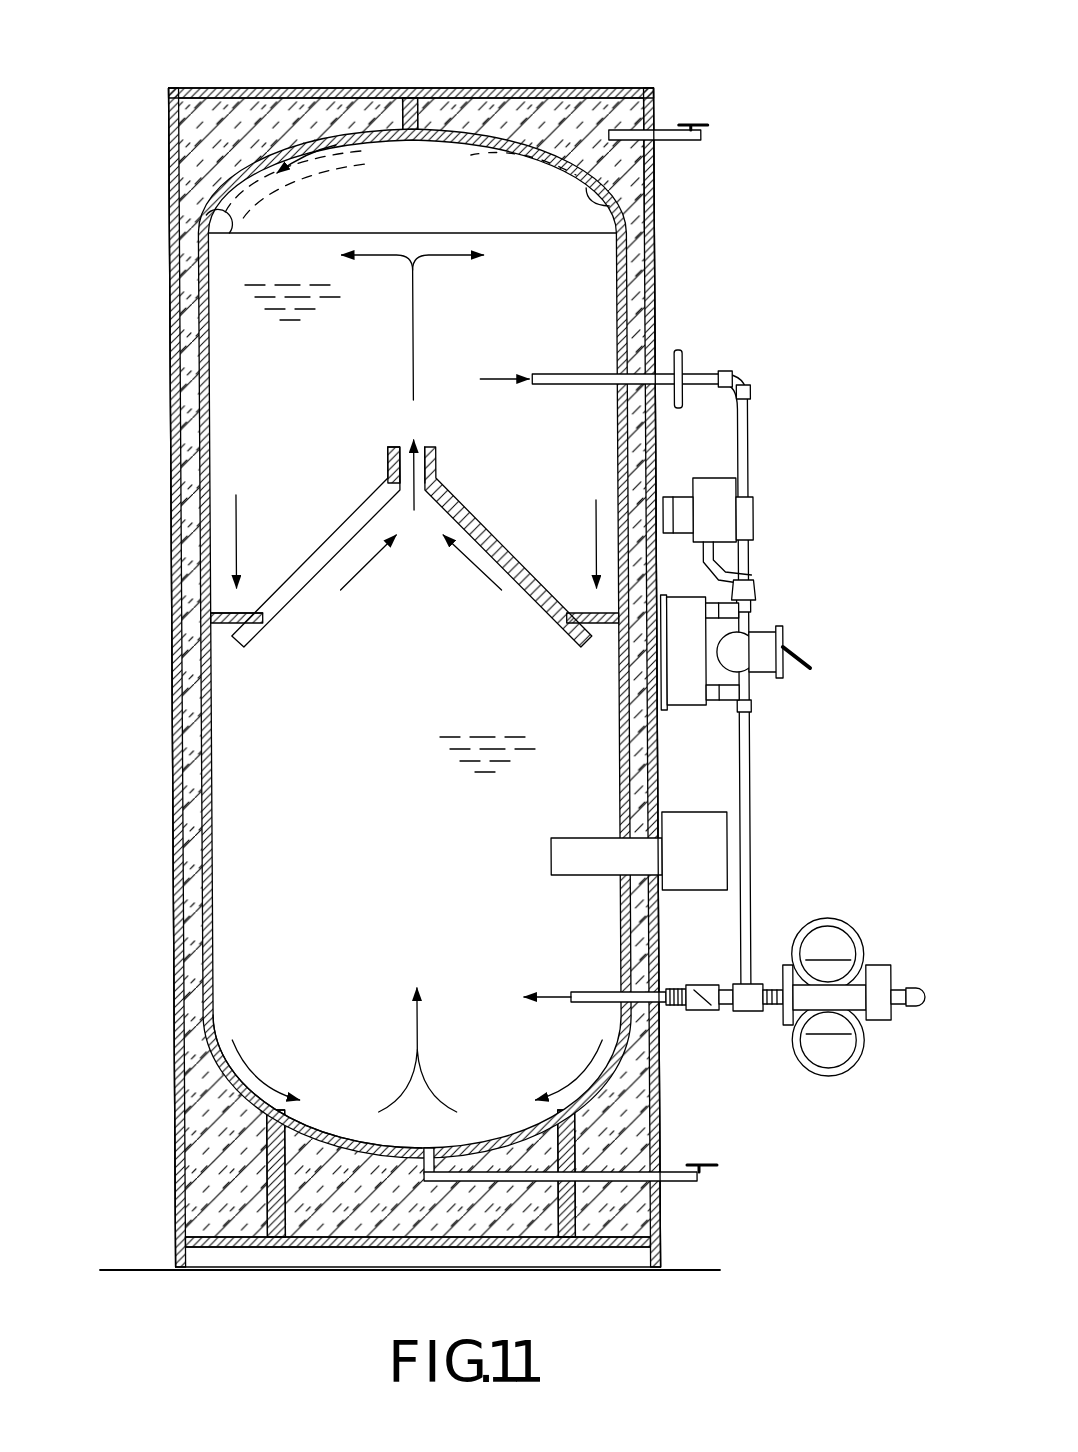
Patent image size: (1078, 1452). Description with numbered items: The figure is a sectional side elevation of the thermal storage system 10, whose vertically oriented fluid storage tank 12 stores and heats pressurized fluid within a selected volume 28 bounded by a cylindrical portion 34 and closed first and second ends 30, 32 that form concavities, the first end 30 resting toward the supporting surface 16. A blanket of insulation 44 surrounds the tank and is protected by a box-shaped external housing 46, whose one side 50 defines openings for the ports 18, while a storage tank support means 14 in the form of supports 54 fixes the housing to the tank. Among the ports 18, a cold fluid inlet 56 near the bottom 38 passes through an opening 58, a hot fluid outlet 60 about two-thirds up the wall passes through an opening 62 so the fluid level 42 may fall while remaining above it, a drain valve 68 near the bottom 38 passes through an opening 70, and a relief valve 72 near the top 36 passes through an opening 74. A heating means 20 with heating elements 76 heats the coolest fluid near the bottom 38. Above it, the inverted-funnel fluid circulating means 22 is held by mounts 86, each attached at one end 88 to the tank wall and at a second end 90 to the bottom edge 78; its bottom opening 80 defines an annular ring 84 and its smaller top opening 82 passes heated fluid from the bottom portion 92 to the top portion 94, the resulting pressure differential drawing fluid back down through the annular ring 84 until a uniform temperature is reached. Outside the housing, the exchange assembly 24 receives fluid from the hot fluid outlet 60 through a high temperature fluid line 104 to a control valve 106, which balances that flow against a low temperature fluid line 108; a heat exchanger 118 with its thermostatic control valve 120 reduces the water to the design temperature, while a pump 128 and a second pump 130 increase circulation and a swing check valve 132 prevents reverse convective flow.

The thermal storage system 10 is at (806, 135).
The fluid storage tank 12 is at (200, 885).
The storage tank support means 14 is at (560, 1200).
The supporting surface 16 is at (140, 1268).
The ports 18 is at (560, 170).
The heating means 20 is at (694, 851).
The fluid circulating means 22 is at (411, 545).
The exchange assembly 24 is at (758, 546).
The volume 28 is at (232, 748).
The first end 30 is at (228, 1100).
The second end 32 is at (215, 180).
The cylindrical portion 34 is at (188, 380).
The top of the storage tank 36 is at (335, 115).
The bottom of the storage tank 38 is at (360, 1160).
The fluid level 42 is at (208, 213).
The insulation 44 is at (605, 130).
The external housing 46 is at (656, 210).
The side of the external housing 50 is at (656, 232).
The supports 54 is at (268, 1168).
The cold fluid inlet 56 is at (592, 1005).
The opening 58 is at (666, 1010).
The hot fluid outlet 60 is at (598, 392).
The opening 62 is at (648, 345).
The drain valve 68 is at (692, 1172).
The opening 70 is at (690, 1183).
The relief valve 72 is at (690, 128).
The opening 74 is at (672, 128).
The heating elements 76 is at (578, 836).
The bottom edge 78 is at (240, 650).
The bottom opening 80 is at (575, 645).
The top opening 82 is at (430, 440).
The annular ring 84 is at (218, 492).
The mounts 86 is at (222, 628).
The one end 88 is at (222, 612).
The second end 90 is at (255, 600).
The bottom portion 92 is at (428, 809).
The top portion 94 is at (309, 324).
The high temperature fluid line 104 is at (748, 392).
The control valve 106 is at (706, 478).
The low temperature fluid line 108 is at (748, 830).
The heat exchanger 118 is at (752, 590).
The thermostatic control valve 120 is at (790, 640).
The pump 128 is at (832, 1072).
The second pump 130 is at (840, 918).
The swing check valve 132 is at (705, 1015).